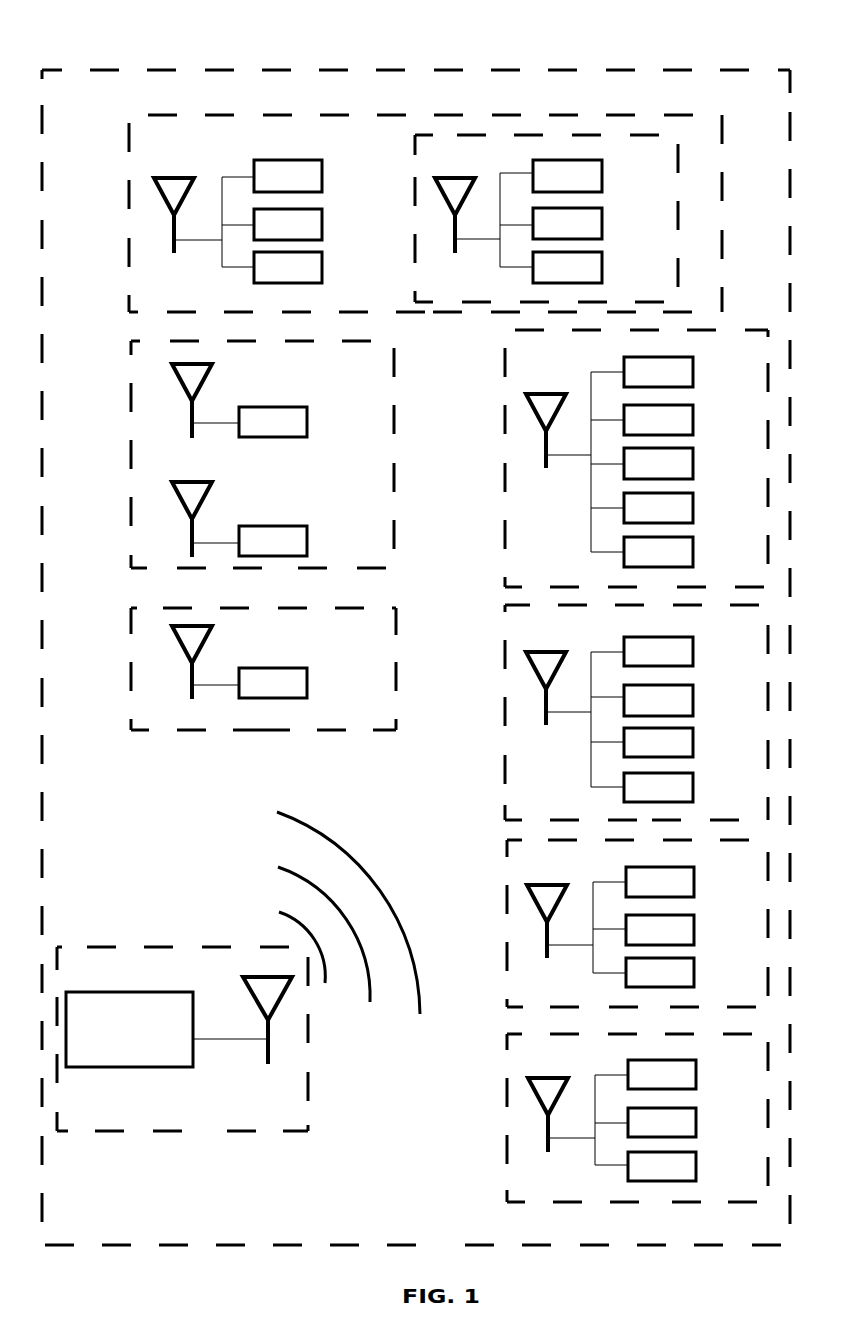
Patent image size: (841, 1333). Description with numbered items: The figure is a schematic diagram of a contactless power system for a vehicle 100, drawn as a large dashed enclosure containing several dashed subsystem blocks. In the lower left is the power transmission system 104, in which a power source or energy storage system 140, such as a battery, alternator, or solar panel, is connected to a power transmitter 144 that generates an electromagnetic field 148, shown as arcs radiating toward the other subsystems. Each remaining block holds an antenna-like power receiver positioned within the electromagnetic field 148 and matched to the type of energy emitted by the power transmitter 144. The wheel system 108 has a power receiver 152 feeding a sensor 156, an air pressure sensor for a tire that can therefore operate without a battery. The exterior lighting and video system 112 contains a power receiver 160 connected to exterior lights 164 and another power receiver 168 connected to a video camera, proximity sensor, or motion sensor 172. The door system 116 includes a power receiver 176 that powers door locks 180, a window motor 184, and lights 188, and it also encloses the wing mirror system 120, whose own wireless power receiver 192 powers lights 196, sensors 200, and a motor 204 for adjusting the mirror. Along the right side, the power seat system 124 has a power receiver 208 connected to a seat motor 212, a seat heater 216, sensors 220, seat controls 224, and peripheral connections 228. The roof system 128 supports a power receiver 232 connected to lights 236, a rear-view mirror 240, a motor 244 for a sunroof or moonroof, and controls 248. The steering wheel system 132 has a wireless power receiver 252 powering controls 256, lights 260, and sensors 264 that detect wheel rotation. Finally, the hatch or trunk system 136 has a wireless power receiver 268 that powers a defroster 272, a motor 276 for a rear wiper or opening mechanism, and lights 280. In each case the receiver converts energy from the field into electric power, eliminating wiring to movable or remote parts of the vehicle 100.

The vehicle 100 is at (678, 70).
The power transmission system 104 is at (240, 1132).
The wheel system 108 is at (175, 607).
The exterior lighting and video system 112 is at (175, 340).
The door system 116 is at (170, 113).
The wing mirror system 120 is at (480, 134).
The power seat system 124 is at (505, 476).
The roof system 128 is at (505, 604).
The steering wheel system 132 is at (507, 839).
The hatch or trunk system 136 is at (507, 1033).
The power source or energy storage system 140 is at (158, 991).
The power transmitter 144 is at (262, 976).
The electromagnetic field 148 is at (248, 849).
The power receiver 152 is at (179, 647).
The sensor 156 is at (302, 668).
The power receiver 160 is at (176, 369).
The exterior lights 164 is at (302, 407).
The power receiver 168 is at (176, 491).
The video camera, proximity sensor, or motion sensor 172 is at (302, 526).
The power receiver 176 is at (156, 180).
The door locks 180 is at (320, 168).
The window motor 184 is at (320, 217).
The lights 188 is at (320, 260).
The wireless power receiver 192 is at (437, 178).
The lights 196 is at (600, 168).
The sensors 200 is at (600, 216).
The motor 204 is at (600, 260).
The power receiver 208 is at (527, 399).
The seat motor 212 is at (691, 365).
The seat heater 216 is at (691, 413).
The sensors 220 is at (691, 456).
The seat controls 224 is at (691, 501).
The peripheral connections 228 is at (691, 545).
The power receiver 232 is at (528, 659).
The lights 236 is at (691, 645).
The rear-view mirror 240 is at (691, 693).
The motor 244 is at (691, 736).
The controls 248 is at (691, 781).
The wireless power receiver 252 is at (529, 889).
The controls 256 is at (692, 875).
The lights 260 is at (692, 923).
The sensors 264 is at (692, 966).
The wireless power receiver 268 is at (530, 1082).
The defroster 272 is at (694, 1068).
The motor 276 is at (694, 1116).
The lights 280 is at (694, 1160).